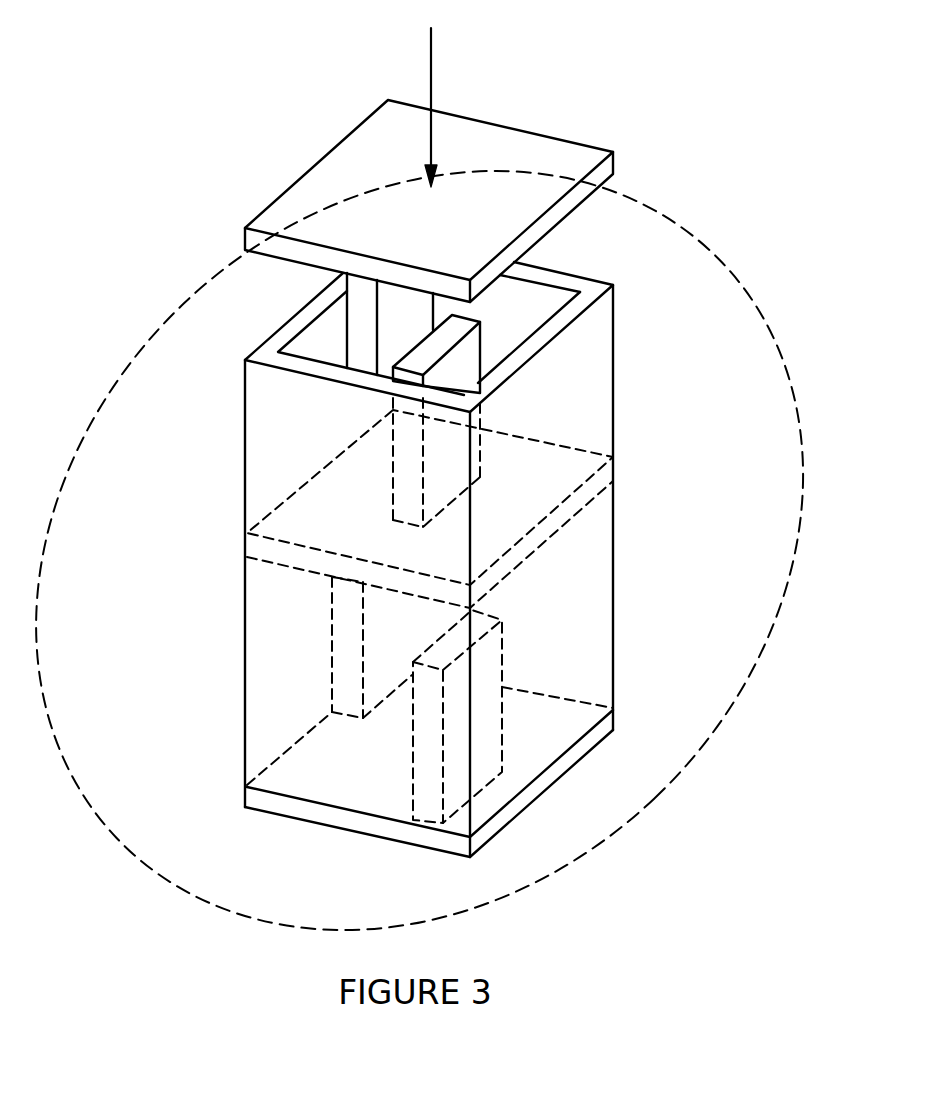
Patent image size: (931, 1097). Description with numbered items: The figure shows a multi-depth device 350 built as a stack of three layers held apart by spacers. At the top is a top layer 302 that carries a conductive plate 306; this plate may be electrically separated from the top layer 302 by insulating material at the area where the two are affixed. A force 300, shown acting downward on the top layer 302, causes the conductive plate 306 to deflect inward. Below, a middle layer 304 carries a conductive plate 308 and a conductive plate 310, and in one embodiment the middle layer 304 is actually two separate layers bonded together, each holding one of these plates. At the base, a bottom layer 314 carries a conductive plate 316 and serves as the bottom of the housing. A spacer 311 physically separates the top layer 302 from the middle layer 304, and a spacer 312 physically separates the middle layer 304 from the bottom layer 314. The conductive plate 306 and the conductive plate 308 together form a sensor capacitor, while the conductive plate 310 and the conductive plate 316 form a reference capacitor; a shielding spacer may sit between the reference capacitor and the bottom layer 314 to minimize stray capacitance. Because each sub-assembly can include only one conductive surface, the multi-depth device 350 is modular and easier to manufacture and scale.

The force 300 is at (431, 59).
The top layer 302 is at (555, 148).
The middle layer 304 is at (582, 468).
The conductive plate 306 is at (423, 311).
The conductive plate 308 is at (473, 347).
The conductive plate 310 is at (355, 675).
The spacer 311 is at (593, 398).
The spacer 312 is at (595, 595).
The bottom layer 314 is at (602, 741).
The conductive plate 316 is at (485, 732).
The multi-depth device 350 is at (702, 792).